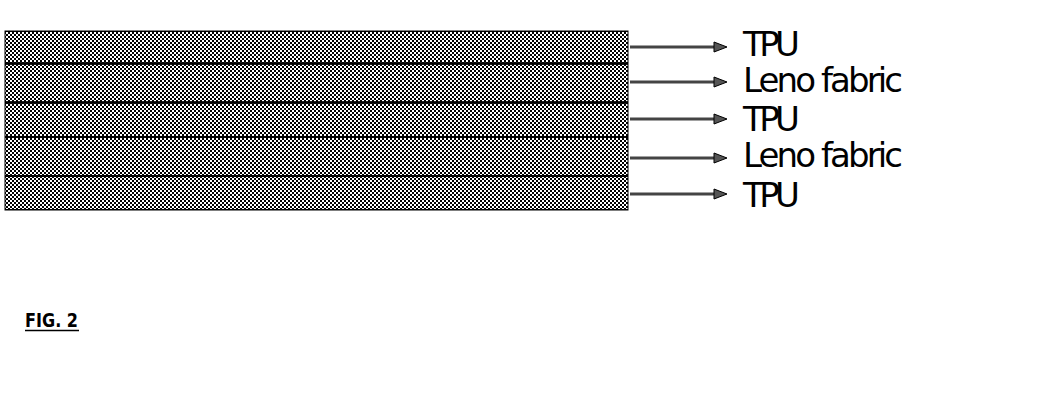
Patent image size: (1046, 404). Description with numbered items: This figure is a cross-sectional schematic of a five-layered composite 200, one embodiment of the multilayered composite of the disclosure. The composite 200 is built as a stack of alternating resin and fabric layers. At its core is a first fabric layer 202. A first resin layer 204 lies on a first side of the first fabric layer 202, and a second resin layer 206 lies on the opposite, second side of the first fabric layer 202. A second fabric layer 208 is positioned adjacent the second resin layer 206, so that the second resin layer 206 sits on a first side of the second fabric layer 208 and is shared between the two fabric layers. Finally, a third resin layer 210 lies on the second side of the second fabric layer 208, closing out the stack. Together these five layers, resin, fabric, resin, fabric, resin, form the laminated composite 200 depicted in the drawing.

The composite 200 is at (648, 218).
The first fabric layer 202 is at (152, 83).
The first resin layer 204 is at (73, 48).
The second resin layer 206 is at (272, 119).
The second fabric layer 208 is at (397, 158).
The third resin layer 210 is at (550, 195).